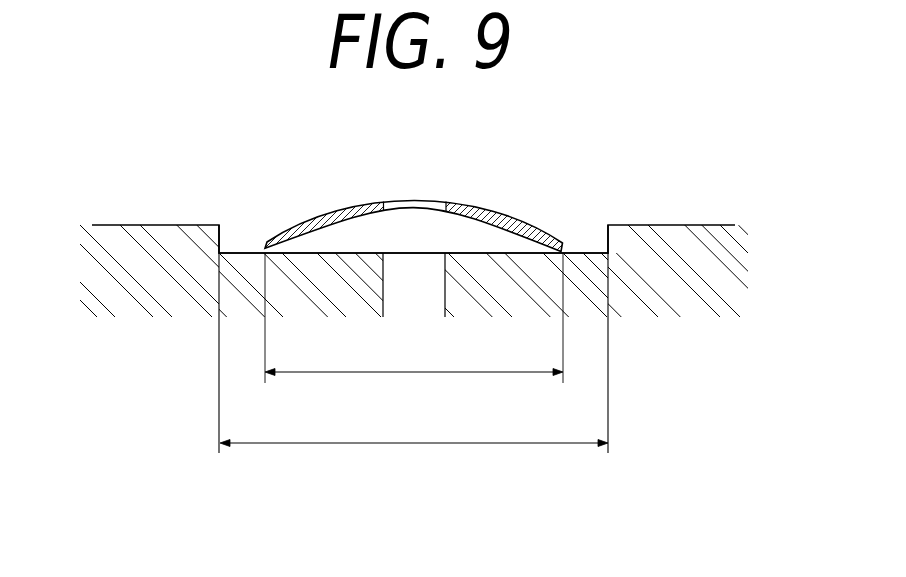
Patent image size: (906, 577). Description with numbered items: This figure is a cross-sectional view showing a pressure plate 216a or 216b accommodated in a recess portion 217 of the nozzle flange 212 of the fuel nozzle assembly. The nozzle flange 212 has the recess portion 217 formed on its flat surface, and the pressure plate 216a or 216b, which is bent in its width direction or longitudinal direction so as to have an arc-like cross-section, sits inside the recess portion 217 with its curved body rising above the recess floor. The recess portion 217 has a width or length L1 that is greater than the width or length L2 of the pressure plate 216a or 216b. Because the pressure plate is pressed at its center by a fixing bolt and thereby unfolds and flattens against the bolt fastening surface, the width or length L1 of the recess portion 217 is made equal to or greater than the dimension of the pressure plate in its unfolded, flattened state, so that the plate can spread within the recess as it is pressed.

The pressure plate 216a is at (456, 194).
The pressure plate 216b is at (460, 207).
The recess portion 217 is at (578, 252).
The nozzle flange 212 is at (650, 243).
The width or length of the recess portion L1 is at (413, 353).
The width or length of the pressure plate L2 is at (414, 318).